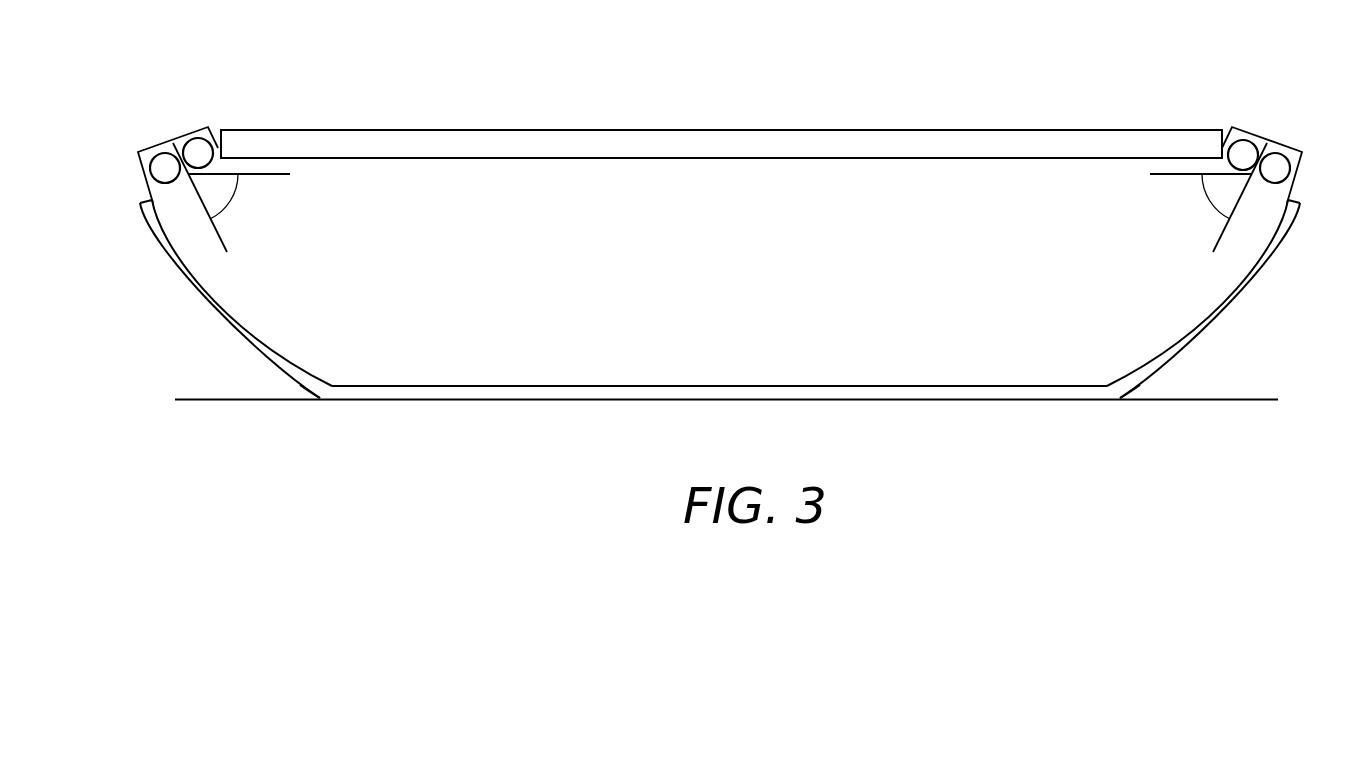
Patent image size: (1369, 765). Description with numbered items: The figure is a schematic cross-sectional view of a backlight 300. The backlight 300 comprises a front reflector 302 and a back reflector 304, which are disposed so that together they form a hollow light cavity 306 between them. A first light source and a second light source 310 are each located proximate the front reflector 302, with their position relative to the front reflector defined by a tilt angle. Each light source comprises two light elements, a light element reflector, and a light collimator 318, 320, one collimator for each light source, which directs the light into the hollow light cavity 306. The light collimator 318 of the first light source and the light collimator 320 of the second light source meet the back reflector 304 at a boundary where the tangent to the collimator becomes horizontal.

The backlight 300 is at (141, 127).
The second light source 310 is at (1299, 127).
The front reflector 302 is at (642, 130).
The back reflector 304 is at (920, 401).
The hollow light cavity 306 is at (733, 277).
The light collimator 318 is at (207, 297).
The light collimator 320 is at (1237, 297).